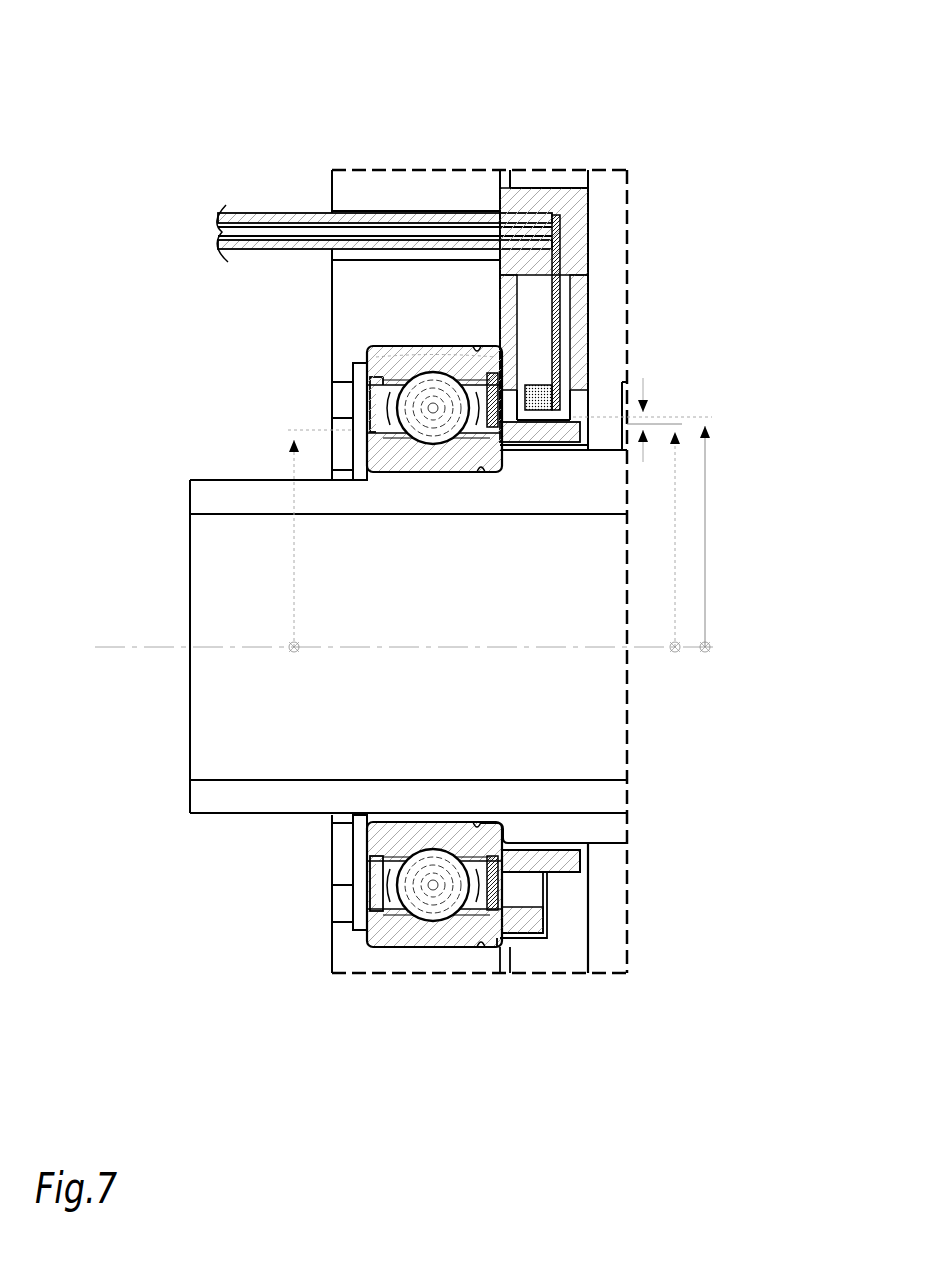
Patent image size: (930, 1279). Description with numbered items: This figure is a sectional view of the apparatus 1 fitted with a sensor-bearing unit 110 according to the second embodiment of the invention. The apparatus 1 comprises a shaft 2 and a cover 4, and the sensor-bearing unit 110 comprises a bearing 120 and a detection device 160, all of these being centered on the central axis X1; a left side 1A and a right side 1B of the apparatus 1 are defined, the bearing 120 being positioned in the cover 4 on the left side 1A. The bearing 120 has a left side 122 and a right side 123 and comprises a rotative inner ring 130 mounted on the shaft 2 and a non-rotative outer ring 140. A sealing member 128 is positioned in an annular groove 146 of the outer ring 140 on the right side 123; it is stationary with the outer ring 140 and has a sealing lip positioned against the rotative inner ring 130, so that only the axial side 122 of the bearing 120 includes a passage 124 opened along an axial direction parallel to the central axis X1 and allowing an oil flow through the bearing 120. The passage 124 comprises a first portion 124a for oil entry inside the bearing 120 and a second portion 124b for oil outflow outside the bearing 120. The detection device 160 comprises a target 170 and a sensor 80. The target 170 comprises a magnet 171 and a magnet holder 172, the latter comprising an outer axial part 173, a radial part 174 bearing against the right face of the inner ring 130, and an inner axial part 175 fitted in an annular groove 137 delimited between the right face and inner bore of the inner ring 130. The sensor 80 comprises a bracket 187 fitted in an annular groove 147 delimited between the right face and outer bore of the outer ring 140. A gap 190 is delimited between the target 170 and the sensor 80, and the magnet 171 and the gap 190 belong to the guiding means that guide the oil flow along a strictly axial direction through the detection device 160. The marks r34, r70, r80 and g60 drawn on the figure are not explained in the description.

The apparatus 1 is at (125, 103).
The shaft 2 is at (233, 797).
The cover 4 is at (355, 970).
The sensor 80 is at (575, 235).
The sensor-bearing unit 110 is at (145, 320).
The bearing 120 is at (365, 320).
The left side 122 is at (268, 408).
The right side 123 is at (672, 370).
The passage 124 is at (370, 392).
The first portion 124a is at (330, 903).
The second portion 124b is at (345, 400).
The sealing member 128 is at (522, 398).
The rotative inner ring 130 is at (405, 475).
The annular groove 137 is at (466, 816).
The non-rotative outer ring 140 is at (425, 350).
The annular groove 146 is at (460, 466).
The annular groove 147 is at (430, 352).
The detection device 160 is at (670, 257).
The target 170 is at (627, 842).
The magnet 171 is at (582, 872).
The magnet holder 172 is at (560, 867).
The outer axial part 173 is at (560, 862).
The radial part 174 is at (505, 840).
The inner axial part 175 is at (490, 825).
The bracket 187 is at (471, 338).
The gap 190 is at (523, 444).
The left side 1A is at (160, 442).
The right side 1B is at (720, 402).
The central axis X1 is at (391, 646).
The radius r34 is at (317, 541).
The radius r70 is at (659, 538).
The radius r80 is at (647, 534).
The gap g60 is at (648, 433).